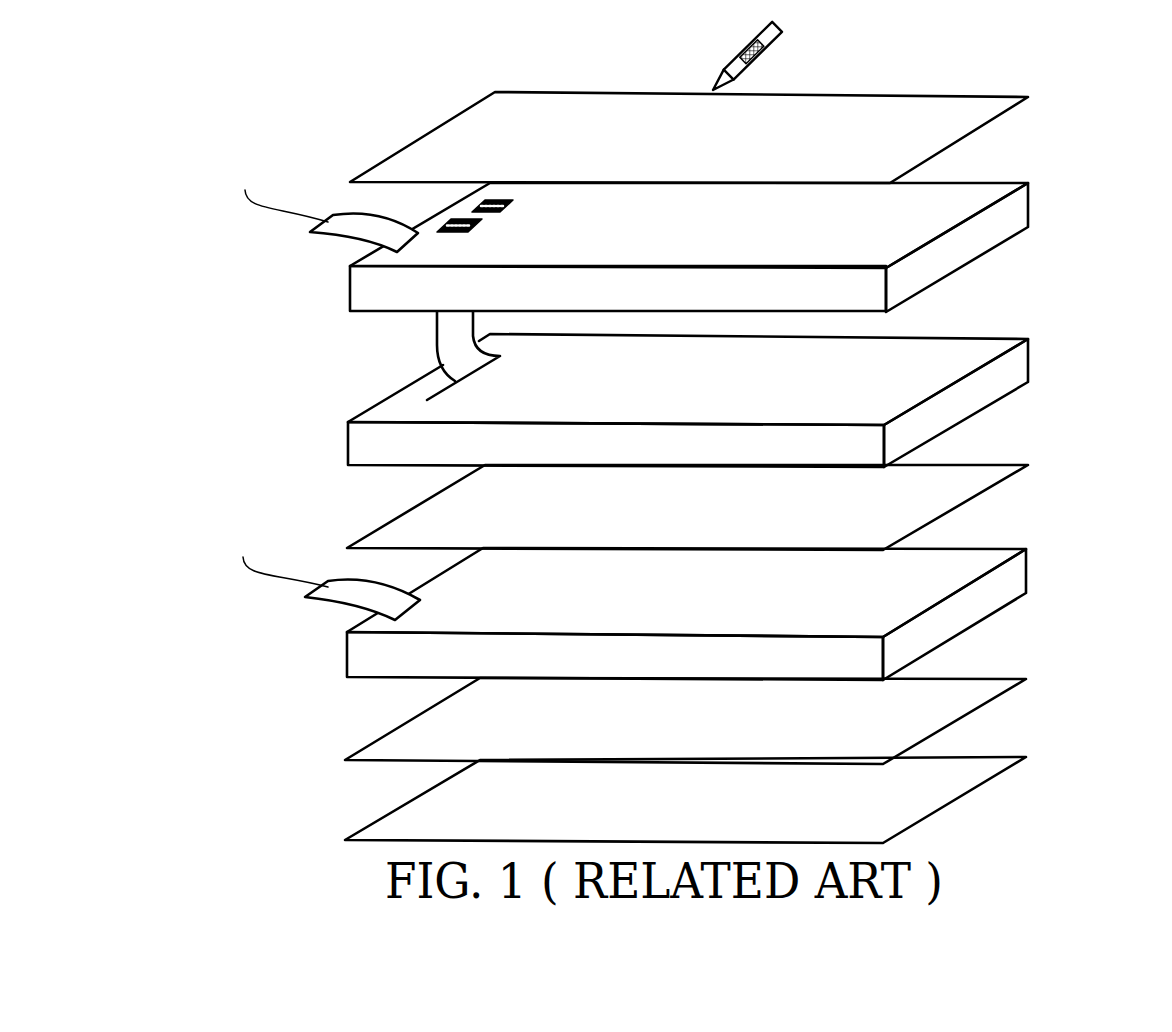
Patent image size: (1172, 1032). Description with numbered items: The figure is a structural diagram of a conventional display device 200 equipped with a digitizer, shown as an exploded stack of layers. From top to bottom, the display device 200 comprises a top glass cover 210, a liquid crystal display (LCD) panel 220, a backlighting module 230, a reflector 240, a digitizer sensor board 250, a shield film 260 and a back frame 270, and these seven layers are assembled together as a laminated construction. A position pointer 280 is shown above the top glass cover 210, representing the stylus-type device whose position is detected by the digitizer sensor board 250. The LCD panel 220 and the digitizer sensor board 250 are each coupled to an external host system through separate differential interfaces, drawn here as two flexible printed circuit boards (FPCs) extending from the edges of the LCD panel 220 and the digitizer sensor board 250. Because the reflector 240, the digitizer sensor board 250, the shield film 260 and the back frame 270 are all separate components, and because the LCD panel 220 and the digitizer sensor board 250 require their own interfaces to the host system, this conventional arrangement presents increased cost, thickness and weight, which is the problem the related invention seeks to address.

The display device 200 is at (684, 443).
The top glass cover 210 is at (970, 108).
The liquid crystal display (LCD) panel 220 is at (970, 200).
The backlighting module 230 is at (968, 353).
The reflector 240 is at (968, 477).
The digitizer sensor board 250 is at (968, 563).
The shield film 260 is at (967, 692).
The back frame 270 is at (967, 772).
The position pointer 280 is at (762, 60).